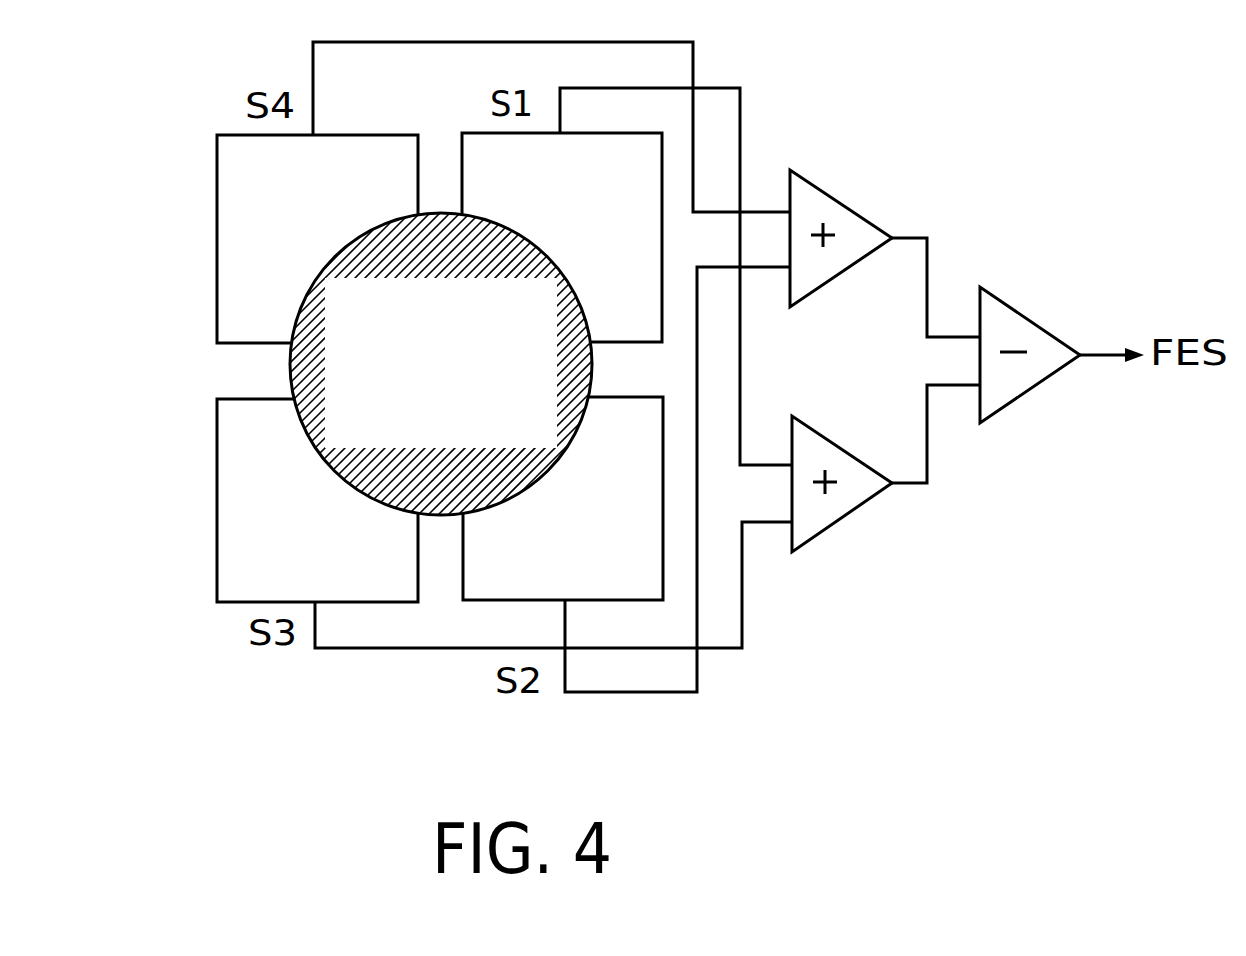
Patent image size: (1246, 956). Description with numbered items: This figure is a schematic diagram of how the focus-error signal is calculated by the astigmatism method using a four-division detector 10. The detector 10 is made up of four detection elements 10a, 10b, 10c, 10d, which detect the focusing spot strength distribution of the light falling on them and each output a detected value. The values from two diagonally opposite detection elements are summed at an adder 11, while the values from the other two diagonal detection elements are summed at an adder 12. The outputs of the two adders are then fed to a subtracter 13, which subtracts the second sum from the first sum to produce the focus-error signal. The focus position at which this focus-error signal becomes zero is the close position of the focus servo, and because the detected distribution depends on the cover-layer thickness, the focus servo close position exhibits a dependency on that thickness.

The four-division detector 10 is at (465, 420).
The detection element 10a is at (662, 225).
The detection element 10b is at (665, 547).
The detection element 10c is at (217, 471).
The detection element 10d is at (217, 235).
The adder 11 is at (837, 443).
The adder 12 is at (848, 207).
The subtracter 13 is at (1027, 315).